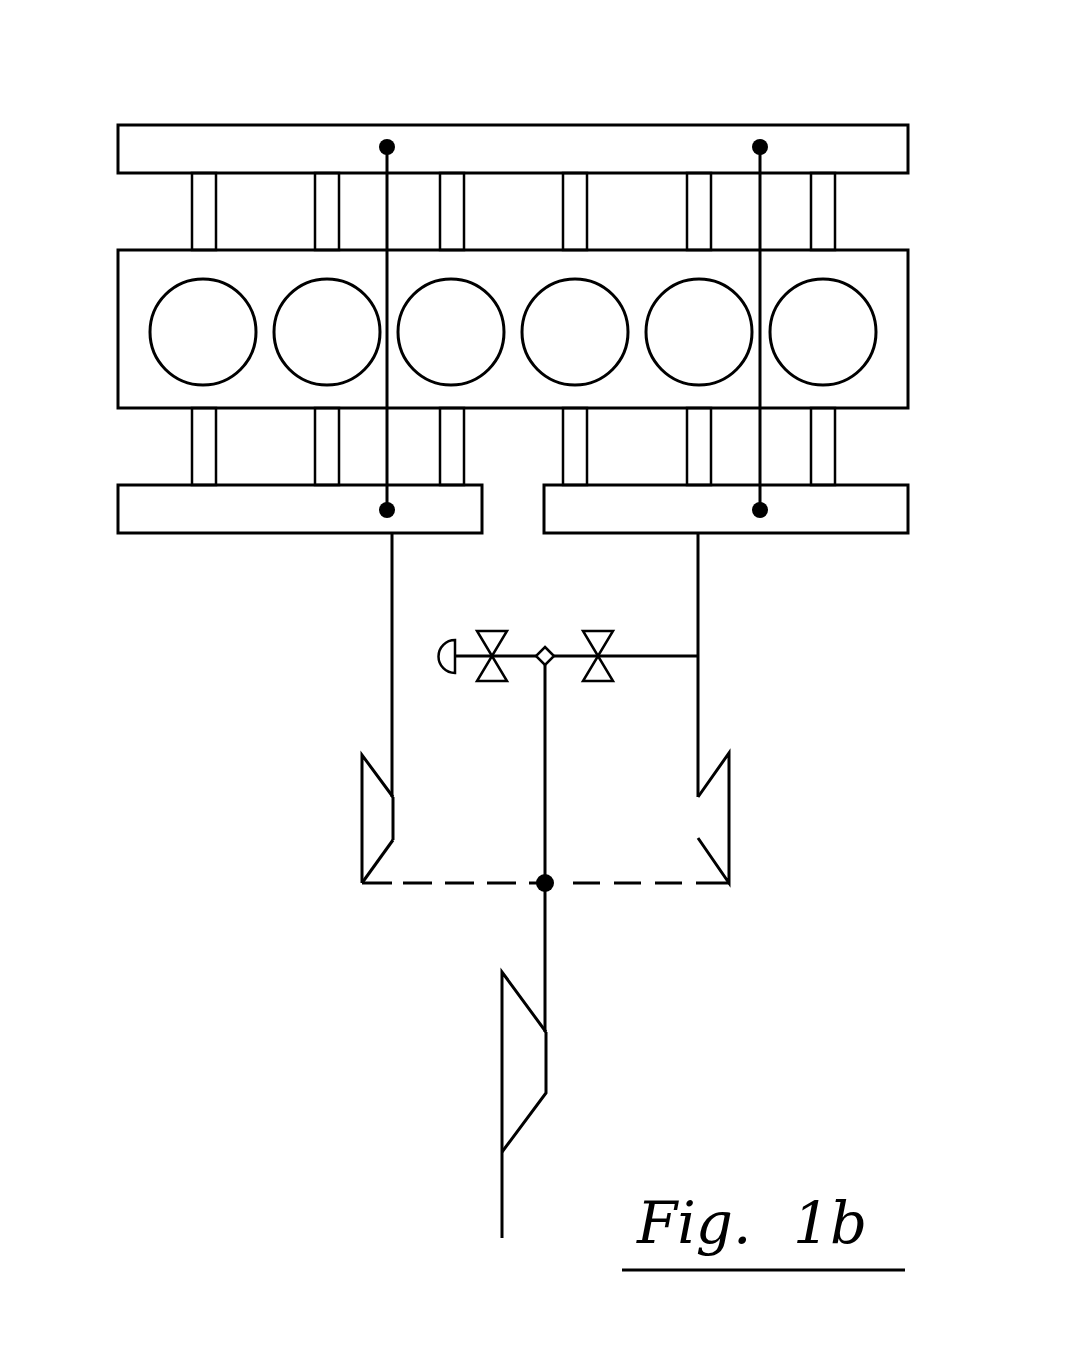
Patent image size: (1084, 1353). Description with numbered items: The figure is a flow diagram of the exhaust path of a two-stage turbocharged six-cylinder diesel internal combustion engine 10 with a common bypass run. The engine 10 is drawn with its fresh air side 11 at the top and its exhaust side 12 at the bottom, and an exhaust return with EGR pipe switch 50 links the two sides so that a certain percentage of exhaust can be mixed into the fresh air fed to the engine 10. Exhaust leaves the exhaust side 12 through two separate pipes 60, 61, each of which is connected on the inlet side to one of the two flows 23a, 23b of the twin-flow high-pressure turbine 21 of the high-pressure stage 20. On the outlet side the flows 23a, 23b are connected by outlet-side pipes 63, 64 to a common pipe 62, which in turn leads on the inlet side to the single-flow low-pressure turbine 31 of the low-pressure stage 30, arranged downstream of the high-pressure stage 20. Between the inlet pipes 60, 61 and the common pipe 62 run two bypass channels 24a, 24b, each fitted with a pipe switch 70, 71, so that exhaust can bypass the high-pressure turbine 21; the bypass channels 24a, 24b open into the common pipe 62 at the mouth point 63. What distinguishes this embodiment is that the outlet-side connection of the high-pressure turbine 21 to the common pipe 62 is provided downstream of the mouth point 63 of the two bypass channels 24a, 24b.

The internal combustion engine 10 is at (852, 75).
The fresh air side 11 is at (670, 125).
The exhaust side 12 is at (558, 518).
The exhaust return with EGR pipe switch 50 is at (383, 443).
The pipe 60 is at (392, 642).
The pipe 61 is at (700, 698).
The pipe 62 is at (547, 975).
The mouth point 63 is at (545, 647).
The pipe 64 is at (622, 883).
The pipe switch 70 is at (495, 630).
The pipe switch 71 is at (597, 638).
The bypass channel 24a is at (518, 658).
The bypass channel 24b is at (567, 658).
The high-pressure stage 20 is at (290, 821).
The high-pressure turbine 21 is at (365, 802).
The flow 23a is at (370, 837).
The flow 23b is at (720, 792).
The low-pressure stage 30 is at (450, 1105).
The low-pressure turbine 31 is at (502, 1048).